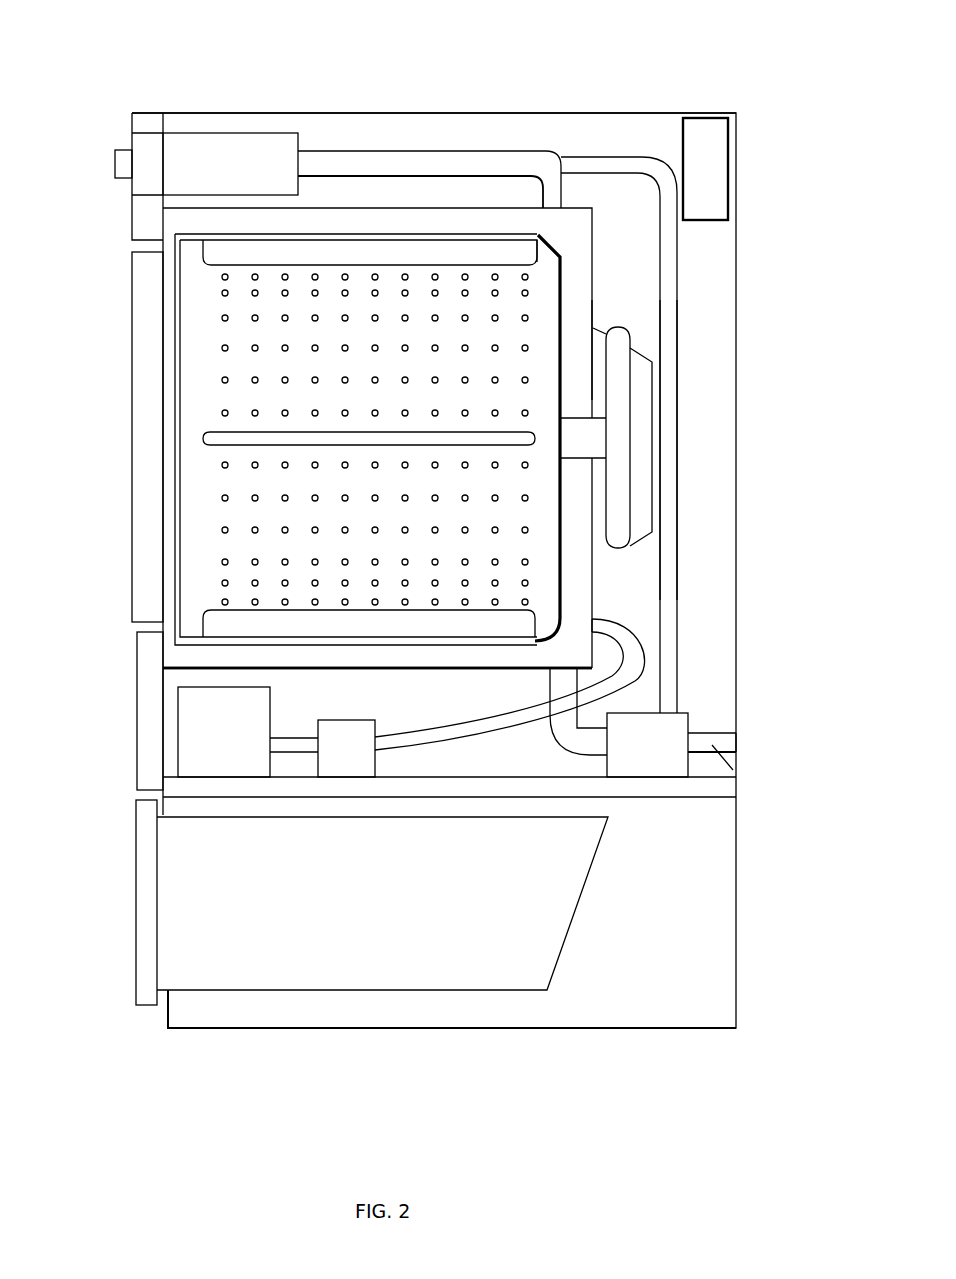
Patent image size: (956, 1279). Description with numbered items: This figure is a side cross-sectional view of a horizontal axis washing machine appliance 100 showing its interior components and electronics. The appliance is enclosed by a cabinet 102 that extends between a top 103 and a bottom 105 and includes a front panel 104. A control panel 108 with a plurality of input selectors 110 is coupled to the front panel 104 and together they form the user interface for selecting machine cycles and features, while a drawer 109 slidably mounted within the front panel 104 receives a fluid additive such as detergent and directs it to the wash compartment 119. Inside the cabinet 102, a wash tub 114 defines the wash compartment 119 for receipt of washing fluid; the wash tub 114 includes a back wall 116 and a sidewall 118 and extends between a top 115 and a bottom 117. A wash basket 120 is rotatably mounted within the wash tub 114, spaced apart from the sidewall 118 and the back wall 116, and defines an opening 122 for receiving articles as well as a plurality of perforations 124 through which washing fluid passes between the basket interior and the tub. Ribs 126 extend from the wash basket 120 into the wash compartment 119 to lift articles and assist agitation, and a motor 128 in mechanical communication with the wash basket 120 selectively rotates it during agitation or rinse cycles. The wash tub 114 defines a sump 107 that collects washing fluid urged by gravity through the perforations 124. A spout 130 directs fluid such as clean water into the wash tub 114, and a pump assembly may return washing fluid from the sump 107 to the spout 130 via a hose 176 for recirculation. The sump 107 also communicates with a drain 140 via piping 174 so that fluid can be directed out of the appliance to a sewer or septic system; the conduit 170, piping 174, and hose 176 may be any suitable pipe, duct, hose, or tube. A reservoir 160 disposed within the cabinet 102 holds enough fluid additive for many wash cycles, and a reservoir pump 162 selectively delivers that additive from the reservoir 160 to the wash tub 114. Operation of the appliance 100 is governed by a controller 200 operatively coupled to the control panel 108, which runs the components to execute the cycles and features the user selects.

The washing machine appliance 100 is at (198, 68).
The cabinet 102 is at (737, 488).
The top 103 is at (758, 112).
The front panel 104 is at (136, 693).
The bottom 105 is at (754, 1027).
The sump 107 is at (382, 662).
The control panel 108 is at (130, 135).
The drawer 109 is at (257, 155).
The input selectors 110 is at (123, 163).
The wash tub 114 is at (598, 300).
The top 115 is at (602, 202).
The back wall 116 is at (597, 608).
The bottom 117 is at (600, 655).
The sidewall 118 is at (465, 670).
The wash compartment 119 is at (196, 218).
The wash basket 120 is at (556, 533).
The opening 122 is at (178, 432).
The perforations 124 is at (255, 377).
The ribs 126 is at (248, 622).
The motor 128 is at (615, 387).
The spout 130 is at (555, 200).
The drain 140 is at (742, 741).
The reservoir 160 is at (200, 748).
The reservoir pump 162 is at (360, 716).
The conduit 170 is at (562, 732).
The piping 174 is at (737, 768).
The hose 176 is at (672, 312).
The controller 200 is at (697, 118).